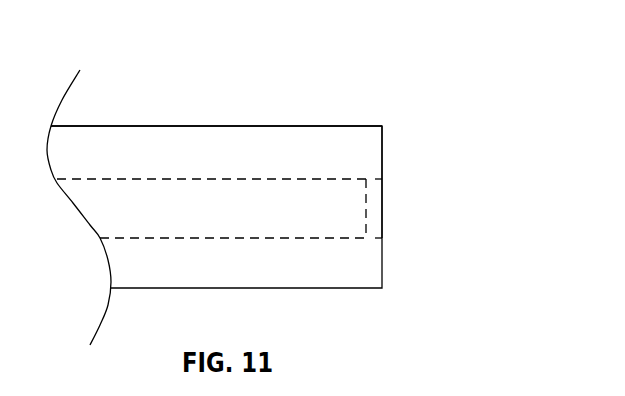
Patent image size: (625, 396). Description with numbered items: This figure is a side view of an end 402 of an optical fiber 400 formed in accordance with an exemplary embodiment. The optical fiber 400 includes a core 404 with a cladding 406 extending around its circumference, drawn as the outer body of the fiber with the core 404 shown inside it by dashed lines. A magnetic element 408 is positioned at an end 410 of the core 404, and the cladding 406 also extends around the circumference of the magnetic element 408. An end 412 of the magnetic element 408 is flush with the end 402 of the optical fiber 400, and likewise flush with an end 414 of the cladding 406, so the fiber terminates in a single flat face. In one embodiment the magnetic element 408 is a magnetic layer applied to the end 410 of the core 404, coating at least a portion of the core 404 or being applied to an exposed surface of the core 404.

The optical fiber 400 is at (396, 60).
The end of the optical fiber 402 is at (414, 162).
The core 404 is at (144, 177).
The cladding 406 is at (238, 145).
The magnetic element 408 is at (375, 226).
The end of the core 410 is at (376, 246).
The end of the magnetic element 412 is at (401, 201).
The end of the cladding 414 is at (392, 152).